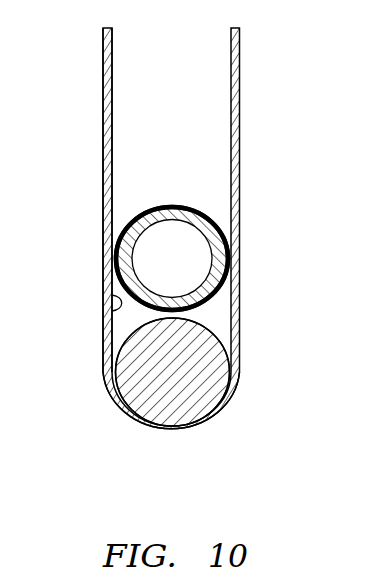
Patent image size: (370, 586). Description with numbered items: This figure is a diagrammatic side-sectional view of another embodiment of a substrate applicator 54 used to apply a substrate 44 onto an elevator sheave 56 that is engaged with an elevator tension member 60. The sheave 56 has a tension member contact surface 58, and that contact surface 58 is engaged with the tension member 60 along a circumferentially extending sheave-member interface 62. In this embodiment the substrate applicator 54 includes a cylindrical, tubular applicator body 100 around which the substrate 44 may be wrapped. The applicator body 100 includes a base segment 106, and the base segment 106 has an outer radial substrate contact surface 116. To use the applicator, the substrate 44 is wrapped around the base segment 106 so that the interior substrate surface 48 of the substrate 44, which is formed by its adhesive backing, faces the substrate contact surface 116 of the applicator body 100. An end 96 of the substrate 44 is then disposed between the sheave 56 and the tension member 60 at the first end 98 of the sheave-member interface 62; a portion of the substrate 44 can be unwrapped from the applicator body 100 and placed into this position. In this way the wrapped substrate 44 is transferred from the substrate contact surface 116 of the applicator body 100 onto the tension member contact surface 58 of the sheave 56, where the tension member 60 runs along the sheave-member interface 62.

The substrate 44 is at (131, 211).
The interior substrate surface 48 is at (112, 300).
The substrate applicator 54 is at (221, 211).
The sheave 56 is at (221, 319).
The tension member contact surface 58 is at (226, 340).
The tension member 60 is at (241, 57).
The sheave-member interface 62 is at (128, 426).
The end of the substrate 96 is at (103, 360).
The first end of the sheave-member interface 98 is at (104, 372).
The applicator body 100 is at (220, 217).
The base segment 106 is at (229, 259).
The substrate contact surface 116 is at (227, 283).